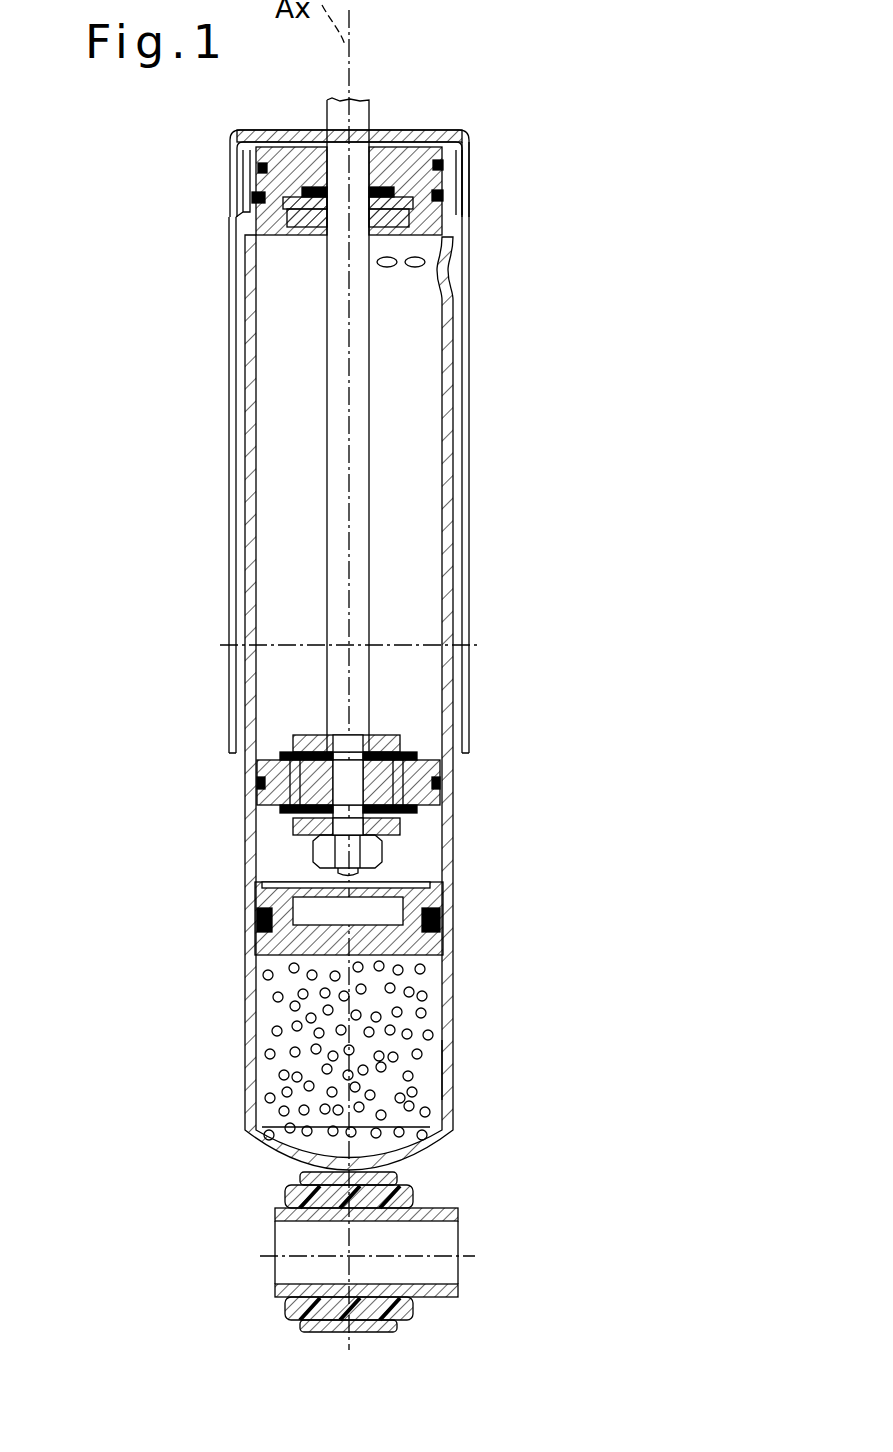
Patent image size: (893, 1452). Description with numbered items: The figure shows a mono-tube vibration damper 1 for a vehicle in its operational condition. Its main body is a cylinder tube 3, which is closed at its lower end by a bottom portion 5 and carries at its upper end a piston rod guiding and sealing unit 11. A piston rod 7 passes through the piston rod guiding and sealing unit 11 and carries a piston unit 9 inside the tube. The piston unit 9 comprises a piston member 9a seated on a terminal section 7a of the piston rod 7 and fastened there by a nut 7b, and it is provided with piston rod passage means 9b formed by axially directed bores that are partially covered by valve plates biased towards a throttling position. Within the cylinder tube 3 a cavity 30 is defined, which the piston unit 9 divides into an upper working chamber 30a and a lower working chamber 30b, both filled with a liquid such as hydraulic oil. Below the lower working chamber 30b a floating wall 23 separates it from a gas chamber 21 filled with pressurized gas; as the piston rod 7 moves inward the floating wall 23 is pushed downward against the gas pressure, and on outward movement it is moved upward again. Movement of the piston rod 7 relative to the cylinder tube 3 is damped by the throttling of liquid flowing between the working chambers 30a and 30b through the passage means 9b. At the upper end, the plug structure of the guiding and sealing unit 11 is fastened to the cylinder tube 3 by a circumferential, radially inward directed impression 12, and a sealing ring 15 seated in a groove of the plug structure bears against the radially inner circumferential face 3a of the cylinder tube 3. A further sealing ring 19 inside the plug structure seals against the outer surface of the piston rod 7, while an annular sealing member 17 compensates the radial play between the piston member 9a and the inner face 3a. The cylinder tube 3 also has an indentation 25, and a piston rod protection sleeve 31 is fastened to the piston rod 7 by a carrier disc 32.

The mono-tube vibration damper 1 is at (160, 321).
The cylinder tube 3 is at (452, 1022).
The radially inner circumferential face of the cylinder tube 3a is at (437, 1060).
The bottom portion 5 is at (275, 1158).
The piston rod 7 is at (355, 456).
The terminal section of the piston rod 7a is at (340, 765).
The nut 7b is at (300, 862).
The piston unit 9 is at (290, 800).
The piston member 9a is at (275, 765).
The piston rod passage means 9b is at (278, 800).
The piston rod guiding and sealing unit 11 is at (430, 180).
The circumferential radially inward directed impression 12 is at (463, 162).
The sealing ring 15 is at (268, 182).
The annular sealing member 17 is at (432, 782).
The sealing ring 19 is at (383, 185).
The gas chamber 21 is at (280, 1035).
The floating wall 23 is at (430, 895).
The indentation 25 is at (388, 267).
The cavity 30 is at (283, 428).
The upper working chamber 30a is at (405, 520).
The lower working chamber 30b is at (412, 845).
The piston rod protection sleeve 31 is at (467, 585).
The carrier disc 32 is at (420, 128).